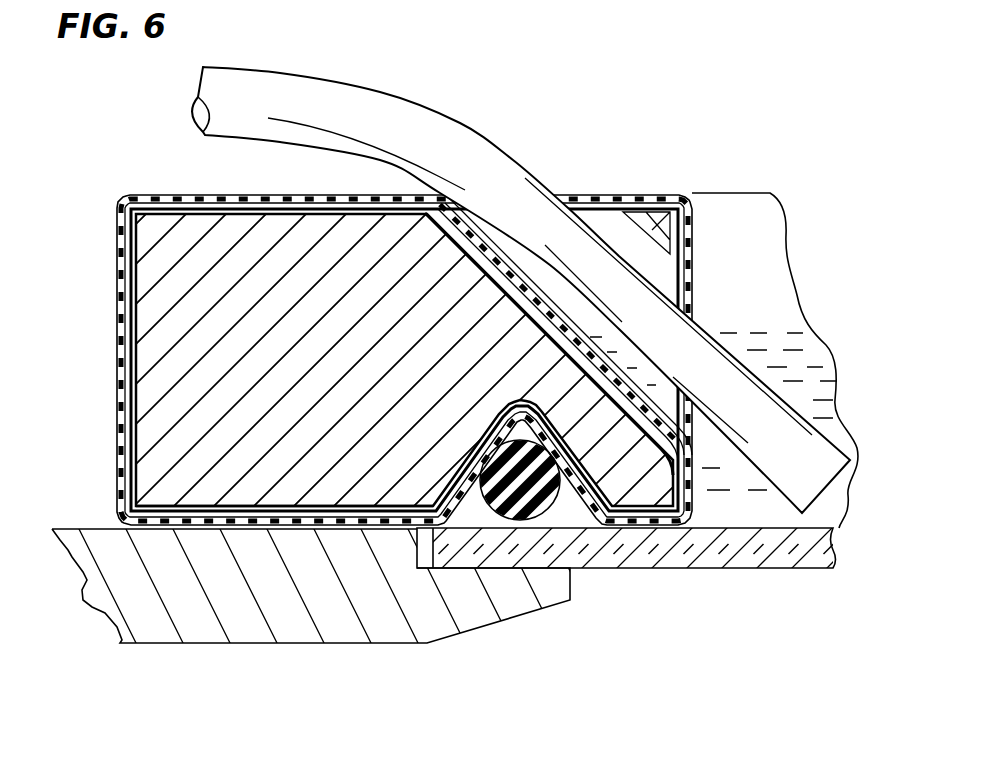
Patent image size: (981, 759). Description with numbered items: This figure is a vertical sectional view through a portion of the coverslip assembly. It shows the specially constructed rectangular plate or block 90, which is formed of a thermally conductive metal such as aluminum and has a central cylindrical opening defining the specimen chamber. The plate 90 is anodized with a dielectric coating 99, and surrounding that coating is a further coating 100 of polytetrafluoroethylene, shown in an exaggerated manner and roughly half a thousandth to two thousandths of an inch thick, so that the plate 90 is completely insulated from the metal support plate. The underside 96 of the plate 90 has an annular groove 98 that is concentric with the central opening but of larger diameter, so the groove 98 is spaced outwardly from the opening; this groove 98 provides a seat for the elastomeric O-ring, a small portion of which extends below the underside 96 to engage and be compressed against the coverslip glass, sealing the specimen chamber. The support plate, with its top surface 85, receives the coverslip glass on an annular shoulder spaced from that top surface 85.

The plate 90 is at (165, 251).
The dielectric coating 99 is at (128, 331).
The coating 100 is at (196, 195).
The top surface 85 is at (274, 500).
The annular groove 98 is at (575, 505).
The underside 96 is at (183, 530).